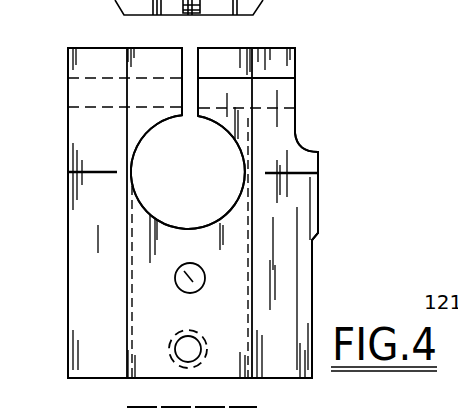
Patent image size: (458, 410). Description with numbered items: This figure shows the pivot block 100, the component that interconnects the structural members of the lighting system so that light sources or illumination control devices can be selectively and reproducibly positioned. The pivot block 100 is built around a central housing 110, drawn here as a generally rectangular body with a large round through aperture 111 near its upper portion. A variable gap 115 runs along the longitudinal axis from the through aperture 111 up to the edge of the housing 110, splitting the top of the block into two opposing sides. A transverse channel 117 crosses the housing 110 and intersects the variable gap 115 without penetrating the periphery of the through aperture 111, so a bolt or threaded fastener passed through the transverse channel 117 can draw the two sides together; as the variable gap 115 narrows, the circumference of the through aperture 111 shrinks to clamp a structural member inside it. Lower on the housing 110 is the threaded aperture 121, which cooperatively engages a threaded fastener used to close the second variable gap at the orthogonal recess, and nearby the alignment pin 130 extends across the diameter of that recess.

The pivot block 100 is at (308, 52).
The central housing 110 is at (297, 209).
The through aperture 111 is at (238, 152).
The variable gap 115 is at (190, 54).
The transverse channel 117 is at (286, 97).
The aperture 121 is at (185, 357).
The alignment pin 130 is at (196, 291).